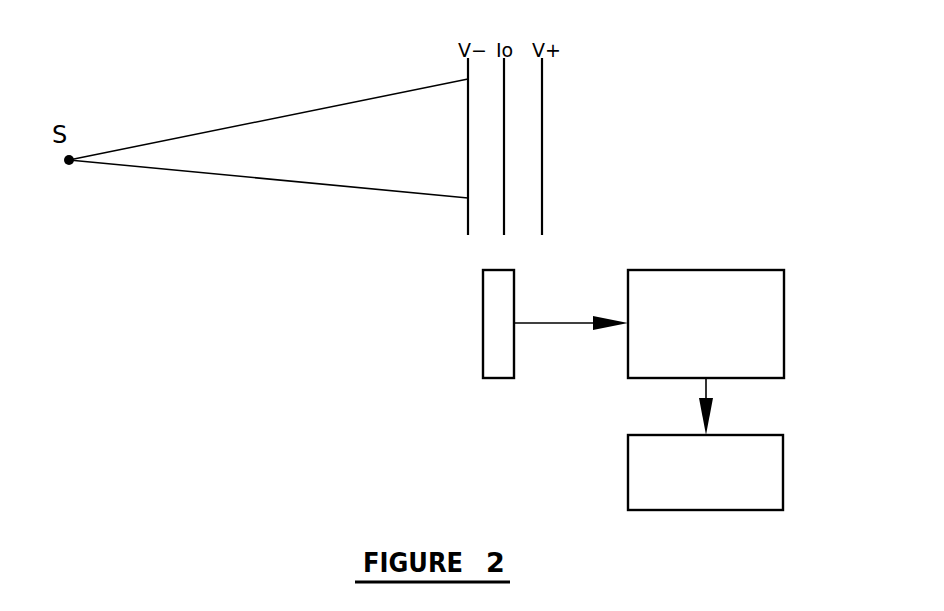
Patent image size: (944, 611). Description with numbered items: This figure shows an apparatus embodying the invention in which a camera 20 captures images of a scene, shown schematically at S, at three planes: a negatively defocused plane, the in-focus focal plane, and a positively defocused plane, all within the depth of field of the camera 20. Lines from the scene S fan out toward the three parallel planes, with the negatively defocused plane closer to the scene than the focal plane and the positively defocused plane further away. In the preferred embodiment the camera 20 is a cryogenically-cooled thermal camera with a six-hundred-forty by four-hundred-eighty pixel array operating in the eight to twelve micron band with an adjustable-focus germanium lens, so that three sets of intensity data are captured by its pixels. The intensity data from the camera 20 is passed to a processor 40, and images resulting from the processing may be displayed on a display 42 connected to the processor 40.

The camera 20 is at (497, 308).
The processor 40 is at (718, 331).
The display 42 is at (718, 481).